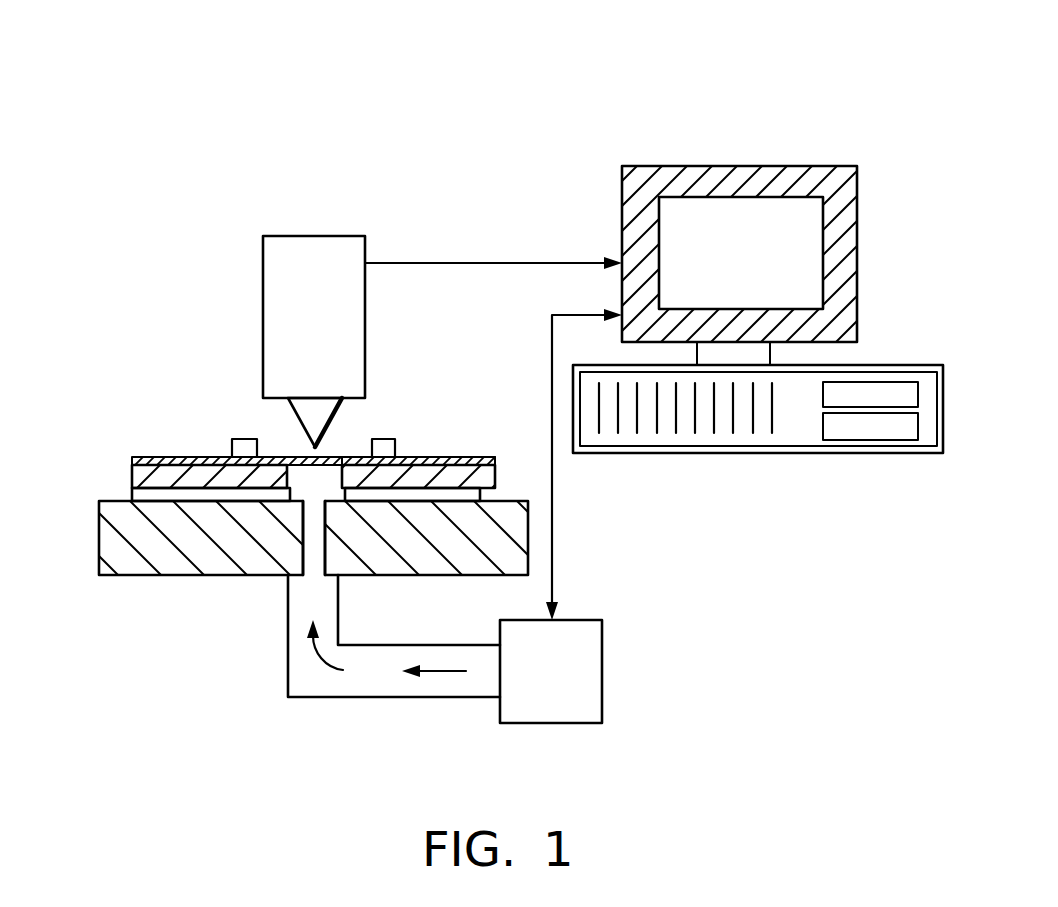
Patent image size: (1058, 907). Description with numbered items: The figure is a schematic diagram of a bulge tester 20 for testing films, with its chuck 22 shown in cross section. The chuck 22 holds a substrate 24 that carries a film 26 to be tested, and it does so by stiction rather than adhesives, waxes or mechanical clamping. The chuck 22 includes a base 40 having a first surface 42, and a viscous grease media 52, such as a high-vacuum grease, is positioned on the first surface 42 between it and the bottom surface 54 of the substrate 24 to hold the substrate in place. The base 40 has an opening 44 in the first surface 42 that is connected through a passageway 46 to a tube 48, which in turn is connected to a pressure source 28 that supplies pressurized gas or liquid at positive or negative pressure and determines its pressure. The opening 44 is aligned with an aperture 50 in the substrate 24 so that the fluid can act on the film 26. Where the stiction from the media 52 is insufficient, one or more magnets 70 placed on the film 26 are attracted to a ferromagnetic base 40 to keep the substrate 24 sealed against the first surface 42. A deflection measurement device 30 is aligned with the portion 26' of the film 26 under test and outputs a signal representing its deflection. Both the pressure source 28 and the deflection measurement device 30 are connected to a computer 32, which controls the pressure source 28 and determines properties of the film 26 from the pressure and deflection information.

The bulge tester 20 is at (546, 54).
The chuck 22 is at (140, 592).
The substrate 24 is at (132, 471).
The film 26 is at (302, 442).
The portion of film 26' is at (406, 441).
The pressure source 28 is at (602, 672).
The deflection measurement device 30 is at (263, 303).
The computer 32 is at (744, 149).
The base 40 is at (105, 543).
The first surface 42 is at (100, 500).
The opening 44 is at (305, 460).
The passageway 46 is at (310, 537).
The tube 48 is at (376, 697).
The aperture 50 is at (316, 500).
The media 52 is at (333, 460).
The bottom surface 54 is at (480, 503).
The magnets 70 is at (232, 448).